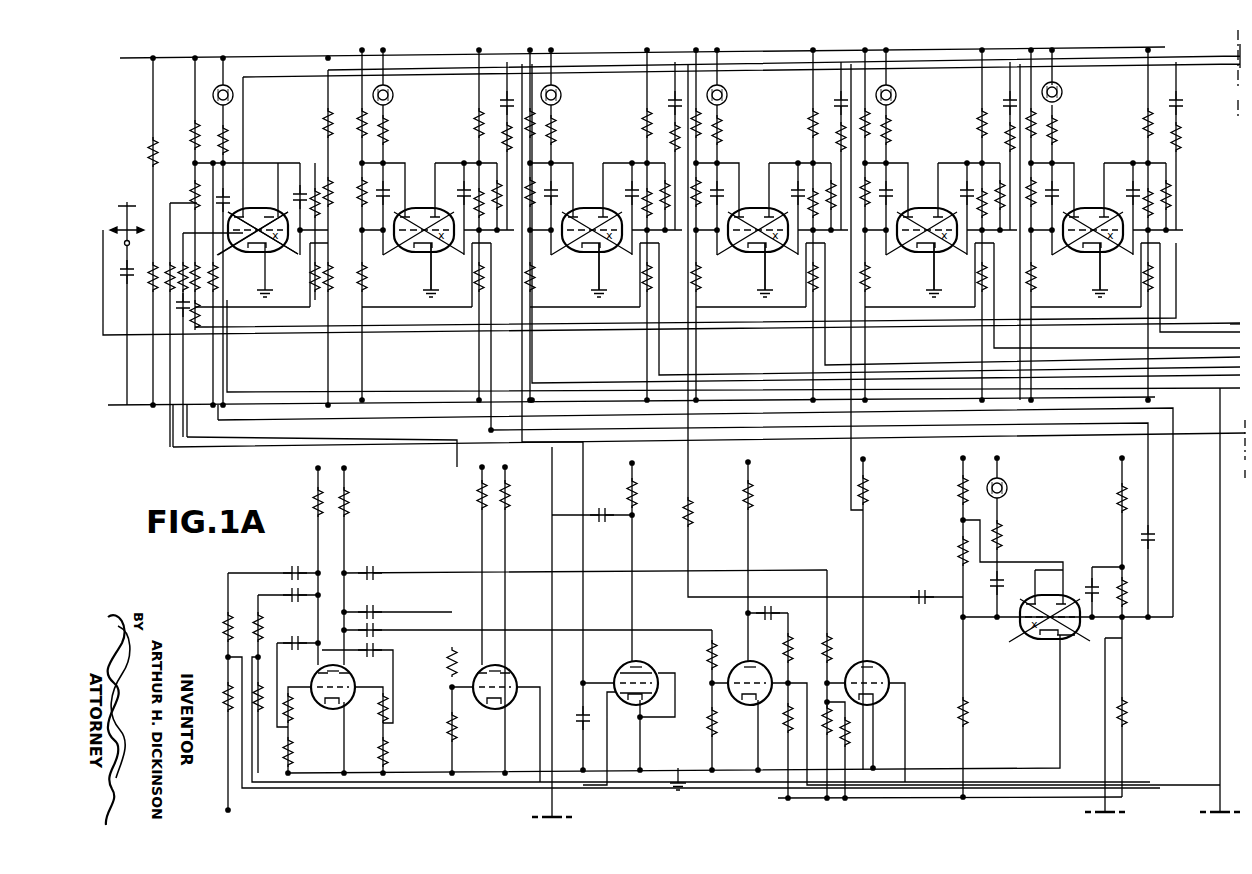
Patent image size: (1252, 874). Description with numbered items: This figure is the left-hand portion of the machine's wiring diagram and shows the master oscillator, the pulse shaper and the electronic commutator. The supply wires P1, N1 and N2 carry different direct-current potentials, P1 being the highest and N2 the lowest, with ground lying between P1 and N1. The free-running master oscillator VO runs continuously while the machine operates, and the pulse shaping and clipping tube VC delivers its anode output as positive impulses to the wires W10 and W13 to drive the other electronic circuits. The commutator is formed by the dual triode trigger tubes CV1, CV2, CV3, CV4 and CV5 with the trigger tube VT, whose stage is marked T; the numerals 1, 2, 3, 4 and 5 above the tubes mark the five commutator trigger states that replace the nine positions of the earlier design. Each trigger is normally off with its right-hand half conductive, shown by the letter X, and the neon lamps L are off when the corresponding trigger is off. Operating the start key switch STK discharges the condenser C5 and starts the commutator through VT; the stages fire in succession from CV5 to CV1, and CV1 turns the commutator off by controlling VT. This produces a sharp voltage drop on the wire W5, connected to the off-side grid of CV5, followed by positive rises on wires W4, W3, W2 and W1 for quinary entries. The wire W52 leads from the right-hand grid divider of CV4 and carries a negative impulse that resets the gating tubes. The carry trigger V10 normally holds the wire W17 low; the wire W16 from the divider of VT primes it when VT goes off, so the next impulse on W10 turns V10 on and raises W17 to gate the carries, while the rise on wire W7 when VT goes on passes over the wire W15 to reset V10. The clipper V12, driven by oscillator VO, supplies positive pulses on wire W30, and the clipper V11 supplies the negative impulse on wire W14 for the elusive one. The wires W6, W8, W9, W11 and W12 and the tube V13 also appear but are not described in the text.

The highest potential supply wire P1 is at (120, 58).
The lowest potential supply wire N2 is at (108, 405).
The intermediate potential supply wire N1 is at (203, 810).
The neon lamp L is at (210, 97).
The trigger tube T is at (257, 222).
The trigger tube VT is at (262, 252).
The commutator trigger state 1 is at (1092, 221).
The commutator trigger state 2 is at (926, 221).
The commutator trigger state 3 is at (757, 221).
The commutator trigger state 4 is at (591, 221).
The commutator trigger state 5 is at (423, 221).
The commutator trigger tube CV1 is at (1094, 250).
The commutator trigger tube CV2 is at (929, 250).
The commutator trigger tube CV3 is at (760, 250).
The commutator trigger tube CV4 is at (594, 250).
The commutator trigger tube CV5 is at (426, 250).
The start key switch STK is at (124, 212).
The condenser C5 is at (122, 274).
The commutator output wire W1 is at (1160, 333).
The commutator output wire W2 is at (992, 343).
The commutator output wire W3 is at (825, 344).
The commutator output wire W4 is at (656, 358).
The five wire W5 is at (571, 378).
The wire W6 is at (124, 338).
The trigger output wire W7 is at (328, 88).
The wire W8 is at (288, 328).
The wire W9 is at (298, 390).
The clipper output wire W10 is at (1130, 57).
The wire W11 is at (243, 115).
The wire W12 is at (586, 596).
The clipper output wire W13 is at (458, 464).
The elusive-one control wire W14 is at (849, 479).
The reset connection wire W15 is at (690, 454).
The carry trigger control wire W16 is at (1174, 498).
The carry gating wire W17 is at (1106, 749).
The suppressor grid pulse wire W30 is at (892, 775).
The gating reset wire W52 is at (554, 600).
The master oscillator VO is at (348, 670).
The pulse shaping and clipping tube VC is at (504, 667).
The carry trigger tube V10 is at (1030, 629).
The clipper and pulse shaper tube V11 is at (878, 670).
The clipper tube V12 is at (758, 663).
The tube V13 is at (644, 672).